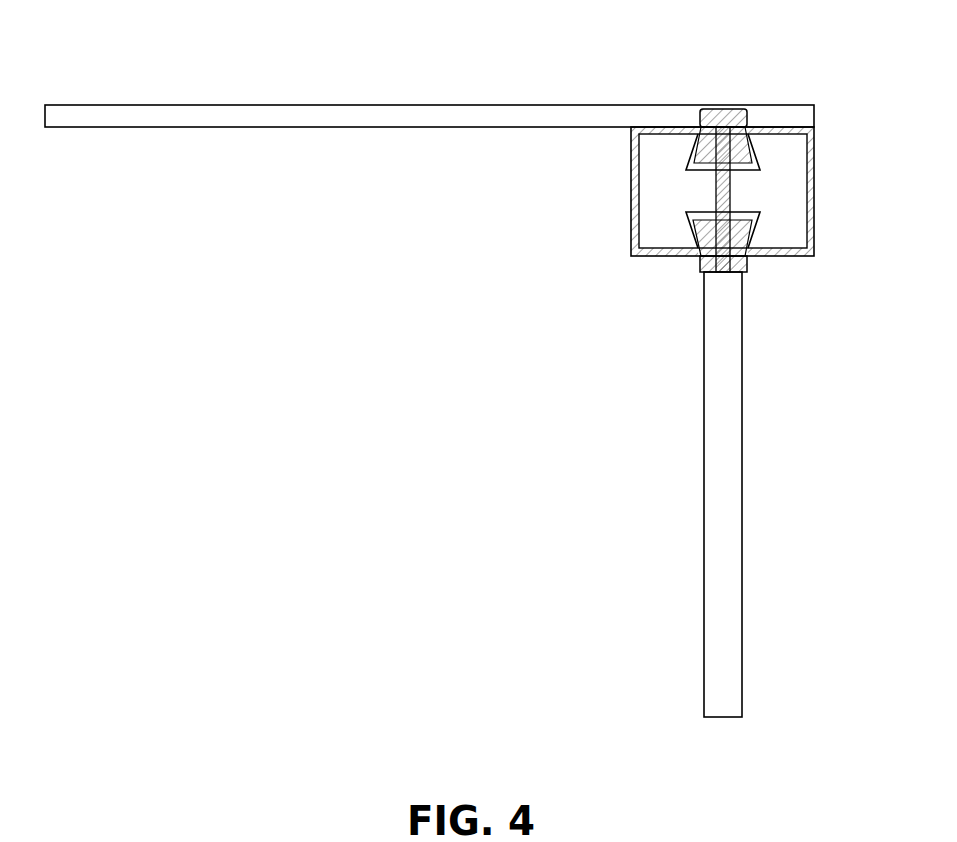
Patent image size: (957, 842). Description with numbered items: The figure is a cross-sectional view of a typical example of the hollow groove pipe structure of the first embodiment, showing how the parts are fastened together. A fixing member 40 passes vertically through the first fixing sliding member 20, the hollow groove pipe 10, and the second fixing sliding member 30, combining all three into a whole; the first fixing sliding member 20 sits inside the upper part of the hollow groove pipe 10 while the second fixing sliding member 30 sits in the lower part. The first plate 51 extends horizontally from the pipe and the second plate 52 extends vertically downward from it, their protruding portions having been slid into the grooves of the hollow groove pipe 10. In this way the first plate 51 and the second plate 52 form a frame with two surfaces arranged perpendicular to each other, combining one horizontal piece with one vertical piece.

The hollow groove pipe 10 is at (810, 202).
The first fixing sliding member 20 is at (750, 146).
The second fixing sliding member 30 is at (708, 230).
The fixing member 40 is at (728, 108).
The first plate 51 is at (255, 105).
The second plate 52 is at (742, 493).